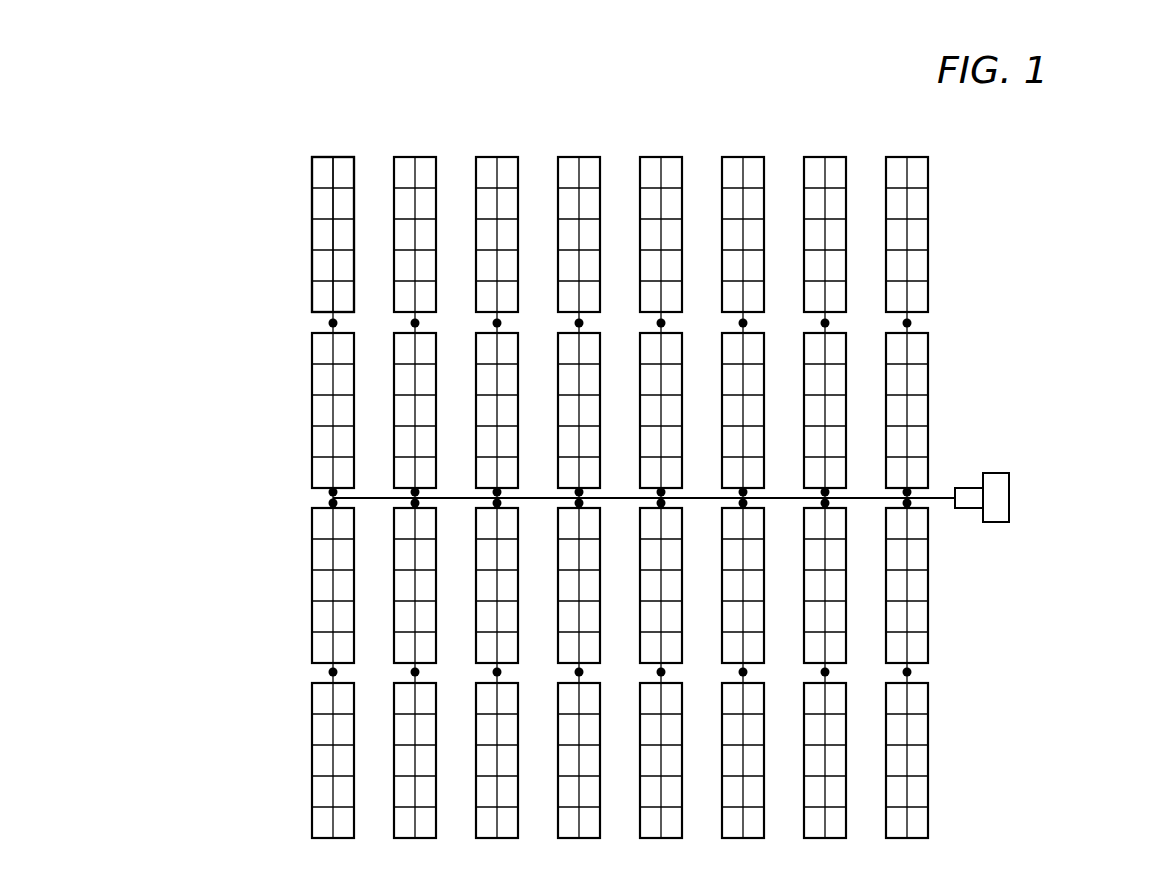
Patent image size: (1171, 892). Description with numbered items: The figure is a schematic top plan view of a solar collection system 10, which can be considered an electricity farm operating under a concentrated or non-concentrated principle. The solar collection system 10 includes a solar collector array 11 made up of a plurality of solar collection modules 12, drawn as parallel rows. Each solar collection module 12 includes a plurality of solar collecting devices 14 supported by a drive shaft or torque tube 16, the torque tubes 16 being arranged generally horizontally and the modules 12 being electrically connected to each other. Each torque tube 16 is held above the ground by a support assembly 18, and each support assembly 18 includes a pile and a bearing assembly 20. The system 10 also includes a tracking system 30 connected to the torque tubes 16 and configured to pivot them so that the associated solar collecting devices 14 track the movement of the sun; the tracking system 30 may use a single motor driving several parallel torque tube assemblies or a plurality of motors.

The solar collection system 10 is at (140, 95).
The solar collector array 11 is at (224, 176).
The solar collection module 12 is at (298, 239).
The solar collecting device 14 is at (323, 163).
The torque tube 16 is at (332, 165).
The support assembly 18 is at (295, 318).
The bearing assembly 20 is at (328, 323).
The tracking system 30 is at (1044, 500).